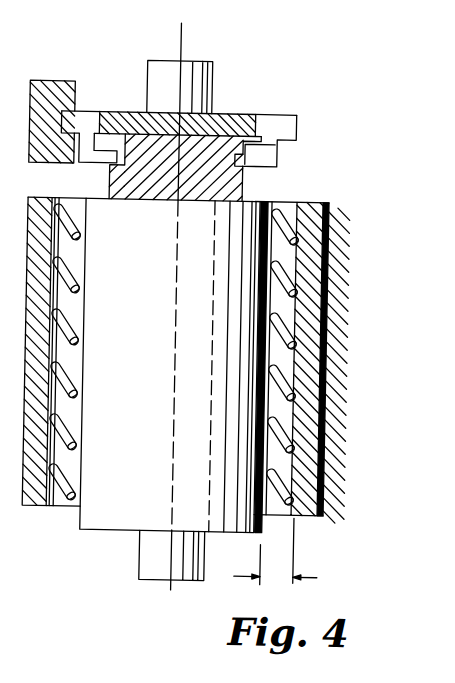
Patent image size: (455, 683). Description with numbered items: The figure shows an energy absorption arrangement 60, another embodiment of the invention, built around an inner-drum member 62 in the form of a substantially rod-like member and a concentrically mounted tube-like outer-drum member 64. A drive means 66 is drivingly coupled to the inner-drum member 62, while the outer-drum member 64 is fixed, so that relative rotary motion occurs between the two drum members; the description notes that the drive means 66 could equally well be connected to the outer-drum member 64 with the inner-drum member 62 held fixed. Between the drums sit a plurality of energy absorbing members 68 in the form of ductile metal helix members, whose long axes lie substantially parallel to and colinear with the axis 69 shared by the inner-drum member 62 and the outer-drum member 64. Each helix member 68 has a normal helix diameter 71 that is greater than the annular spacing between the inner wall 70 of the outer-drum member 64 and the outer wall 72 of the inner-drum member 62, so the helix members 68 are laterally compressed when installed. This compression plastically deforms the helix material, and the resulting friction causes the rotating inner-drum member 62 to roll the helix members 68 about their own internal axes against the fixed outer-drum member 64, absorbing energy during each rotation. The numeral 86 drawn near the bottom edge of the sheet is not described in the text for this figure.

The energy absorption arrangement 60 is at (192, 298).
The inner-drum member 62 is at (242, 191).
The outer-drum member 64 is at (314, 200).
The drive means 66 is at (127, 111).
The energy absorbing members 68 is at (275, 498).
The axis 69 is at (176, 35).
The inner wall 70 is at (56, 512).
The normal helix diameter 71 is at (295, 554).
The outer wall 72 is at (76, 530).
The element 86 is at (6, 666).